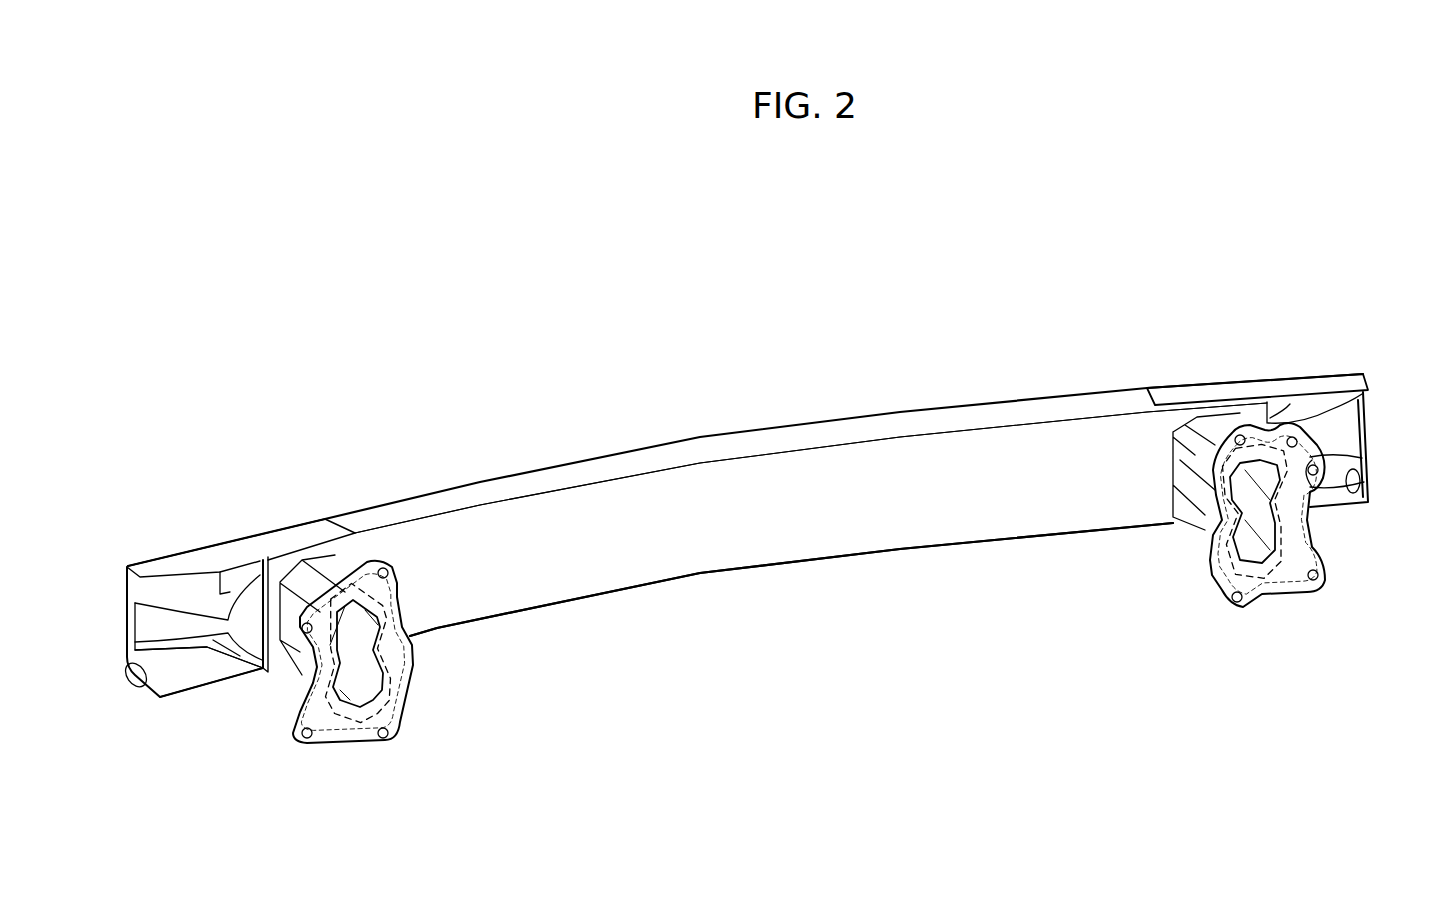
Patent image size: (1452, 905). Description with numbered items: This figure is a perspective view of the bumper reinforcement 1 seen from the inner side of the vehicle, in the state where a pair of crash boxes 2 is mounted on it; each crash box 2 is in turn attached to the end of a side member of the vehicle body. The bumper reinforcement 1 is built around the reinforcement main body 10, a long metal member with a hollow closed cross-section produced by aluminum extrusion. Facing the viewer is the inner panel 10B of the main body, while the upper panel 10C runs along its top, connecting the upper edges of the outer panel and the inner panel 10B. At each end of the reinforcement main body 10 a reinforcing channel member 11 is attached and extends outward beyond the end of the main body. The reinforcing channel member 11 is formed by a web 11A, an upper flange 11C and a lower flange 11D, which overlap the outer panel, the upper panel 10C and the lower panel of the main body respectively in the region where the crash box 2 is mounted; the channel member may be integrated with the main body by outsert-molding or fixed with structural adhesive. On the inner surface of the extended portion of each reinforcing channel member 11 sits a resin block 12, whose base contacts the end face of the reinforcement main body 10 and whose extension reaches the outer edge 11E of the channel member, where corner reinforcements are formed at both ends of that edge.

The bumper reinforcement 1 is at (786, 389).
The reinforcement main body 10 is at (625, 500).
The inner panel 10B is at (747, 548).
The upper panel 10C is at (945, 415).
The reinforcing channel member 11 is at (753, 531).
The web 11A is at (177, 650).
The upper flange 11C is at (278, 540).
The lower flange 11D is at (203, 678).
The outer edge 11E is at (118, 655).
The resin block 12 is at (152, 618).
The crash box 2 is at (362, 690).